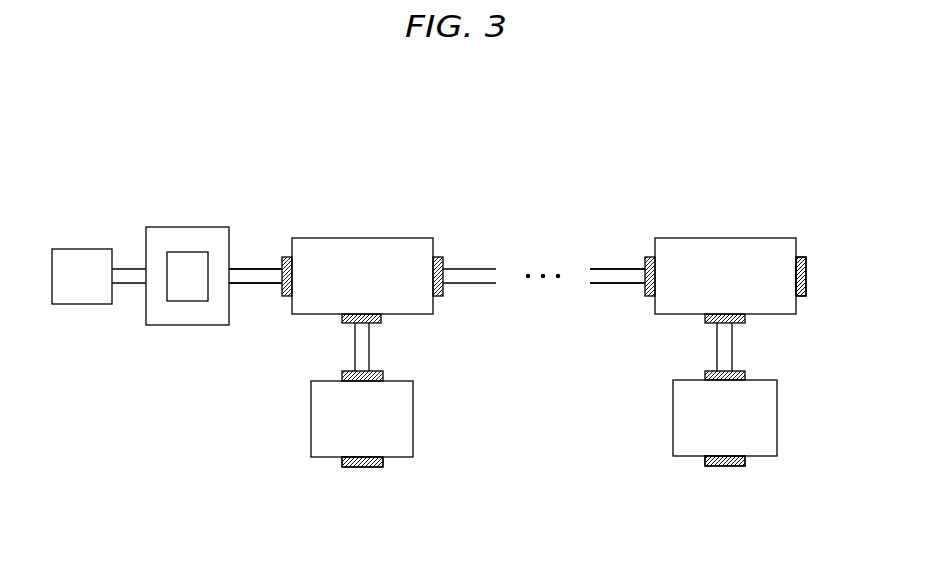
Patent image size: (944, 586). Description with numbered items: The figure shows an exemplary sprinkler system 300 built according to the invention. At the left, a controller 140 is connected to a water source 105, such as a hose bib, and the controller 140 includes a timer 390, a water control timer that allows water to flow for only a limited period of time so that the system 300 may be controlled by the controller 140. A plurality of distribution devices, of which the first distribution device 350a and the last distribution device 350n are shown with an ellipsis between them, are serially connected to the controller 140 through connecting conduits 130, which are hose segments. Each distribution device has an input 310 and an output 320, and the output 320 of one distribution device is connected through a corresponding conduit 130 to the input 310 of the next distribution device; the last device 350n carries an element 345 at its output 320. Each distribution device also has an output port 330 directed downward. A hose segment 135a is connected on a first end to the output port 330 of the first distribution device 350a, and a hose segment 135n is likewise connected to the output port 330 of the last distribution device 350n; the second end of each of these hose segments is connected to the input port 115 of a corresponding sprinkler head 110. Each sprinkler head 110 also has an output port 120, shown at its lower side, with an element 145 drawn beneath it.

The sprinkler system 300 is at (525, 137).
The water source 105 is at (84, 249).
The controller 140 is at (175, 227).
The timer 390 is at (189, 301).
The connecting conduit 130 is at (254, 267).
The input 310 is at (285, 257).
The first distribution device 350a is at (364, 238).
The last distribution device 350n is at (727, 238).
The output 320 is at (440, 257).
The termination / end terminal 345 is at (808, 280).
The output port 330 is at (385, 316).
The first hose segment 135a is at (355, 343).
The last hose segment 135n is at (717, 343).
The input port 115 is at (385, 373).
The sprinkler head 110 is at (413, 428).
The output port 120 is at (340, 460).
The termination connector 145 is at (362, 467).